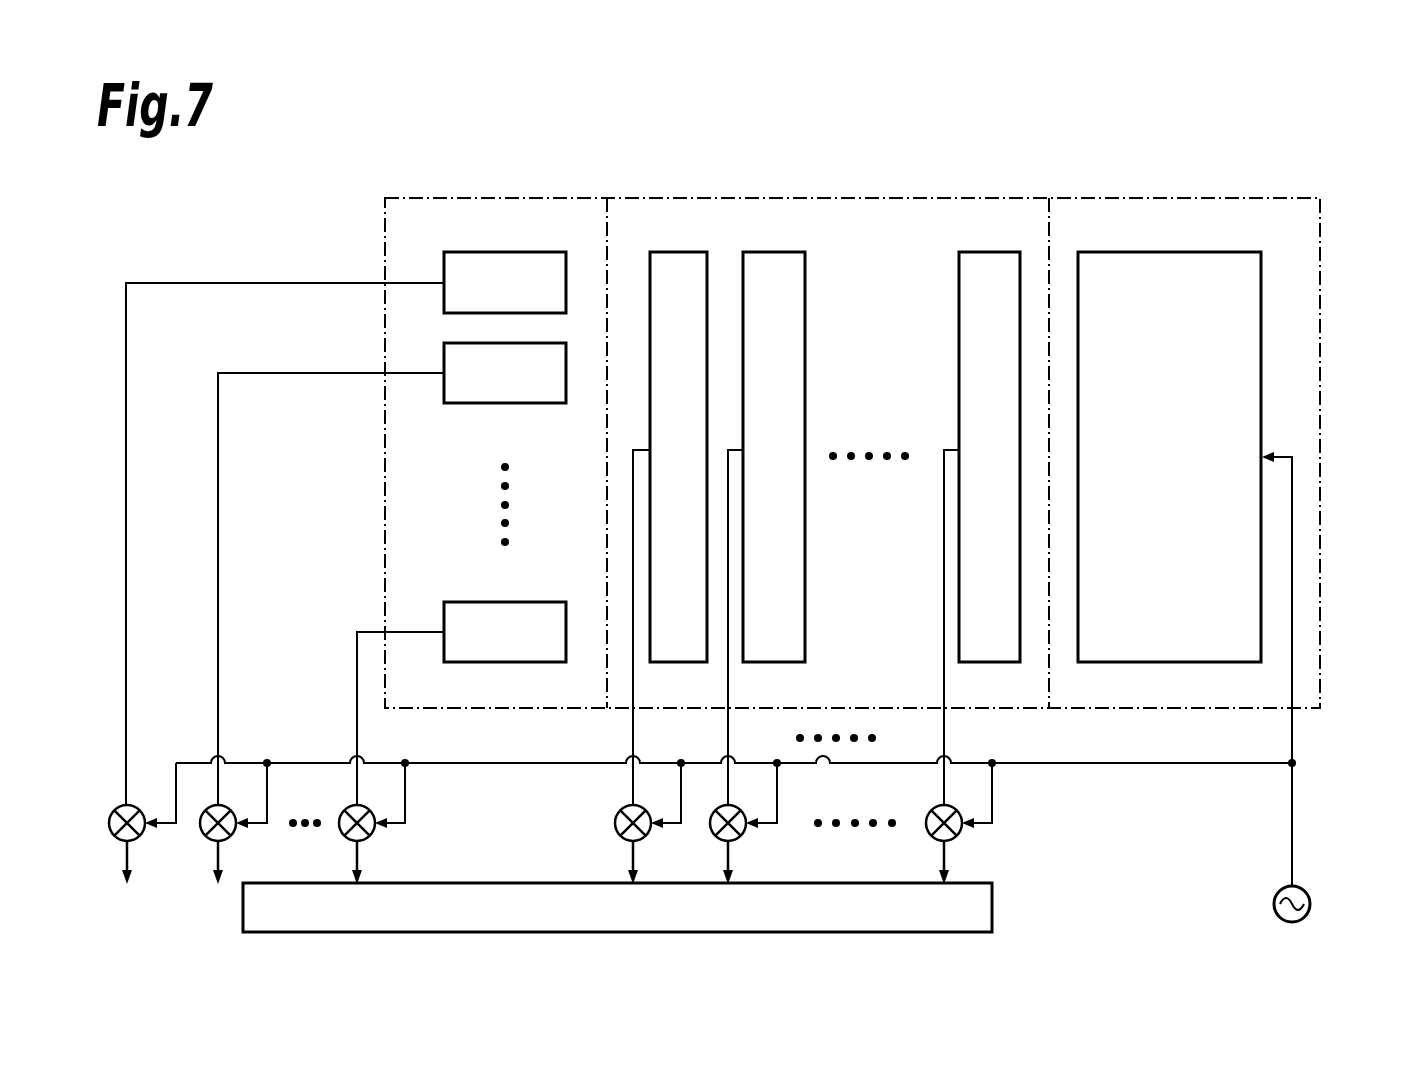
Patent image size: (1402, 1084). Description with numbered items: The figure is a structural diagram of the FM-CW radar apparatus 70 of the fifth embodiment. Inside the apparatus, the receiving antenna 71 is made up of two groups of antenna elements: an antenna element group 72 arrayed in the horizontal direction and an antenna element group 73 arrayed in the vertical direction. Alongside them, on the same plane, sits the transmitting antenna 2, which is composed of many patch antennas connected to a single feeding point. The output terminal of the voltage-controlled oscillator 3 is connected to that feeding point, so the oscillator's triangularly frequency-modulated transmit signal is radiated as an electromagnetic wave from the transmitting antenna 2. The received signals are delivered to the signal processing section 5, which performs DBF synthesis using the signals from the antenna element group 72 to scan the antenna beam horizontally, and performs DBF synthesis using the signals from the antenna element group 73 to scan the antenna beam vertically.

The radar apparatus 70 is at (1336, 206).
The receiving antenna 71 is at (564, 150).
The antenna element group 73 is at (574, 197).
The antenna element group 72 is at (645, 197).
The transmitting antenna 2 is at (1180, 197).
The signal processing section 5 is at (993, 914).
The voltage-controlled oscillator 3 is at (1311, 903).